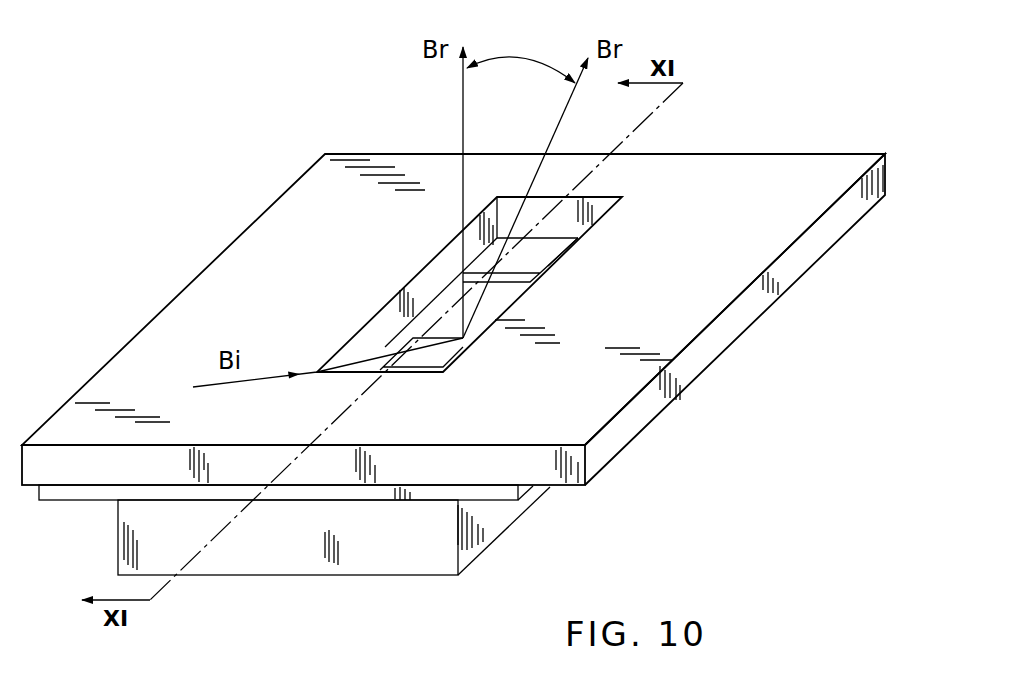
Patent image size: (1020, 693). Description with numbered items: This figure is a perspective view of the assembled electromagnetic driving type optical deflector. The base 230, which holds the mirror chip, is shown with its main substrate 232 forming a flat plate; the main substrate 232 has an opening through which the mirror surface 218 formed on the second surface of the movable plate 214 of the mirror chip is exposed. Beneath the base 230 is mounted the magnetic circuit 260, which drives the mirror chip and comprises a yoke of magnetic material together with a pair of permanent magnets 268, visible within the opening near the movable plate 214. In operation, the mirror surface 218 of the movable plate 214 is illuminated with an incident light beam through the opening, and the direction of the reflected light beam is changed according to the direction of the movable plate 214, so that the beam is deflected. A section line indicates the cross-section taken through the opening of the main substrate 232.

The base 230 is at (152, 308).
The main substrate 232 is at (678, 338).
The movable plate 214 is at (507, 273).
The mirror surface 218 is at (447, 327).
The permanent magnets 268 is at (563, 247).
The magnetic circuit 260 is at (393, 580).